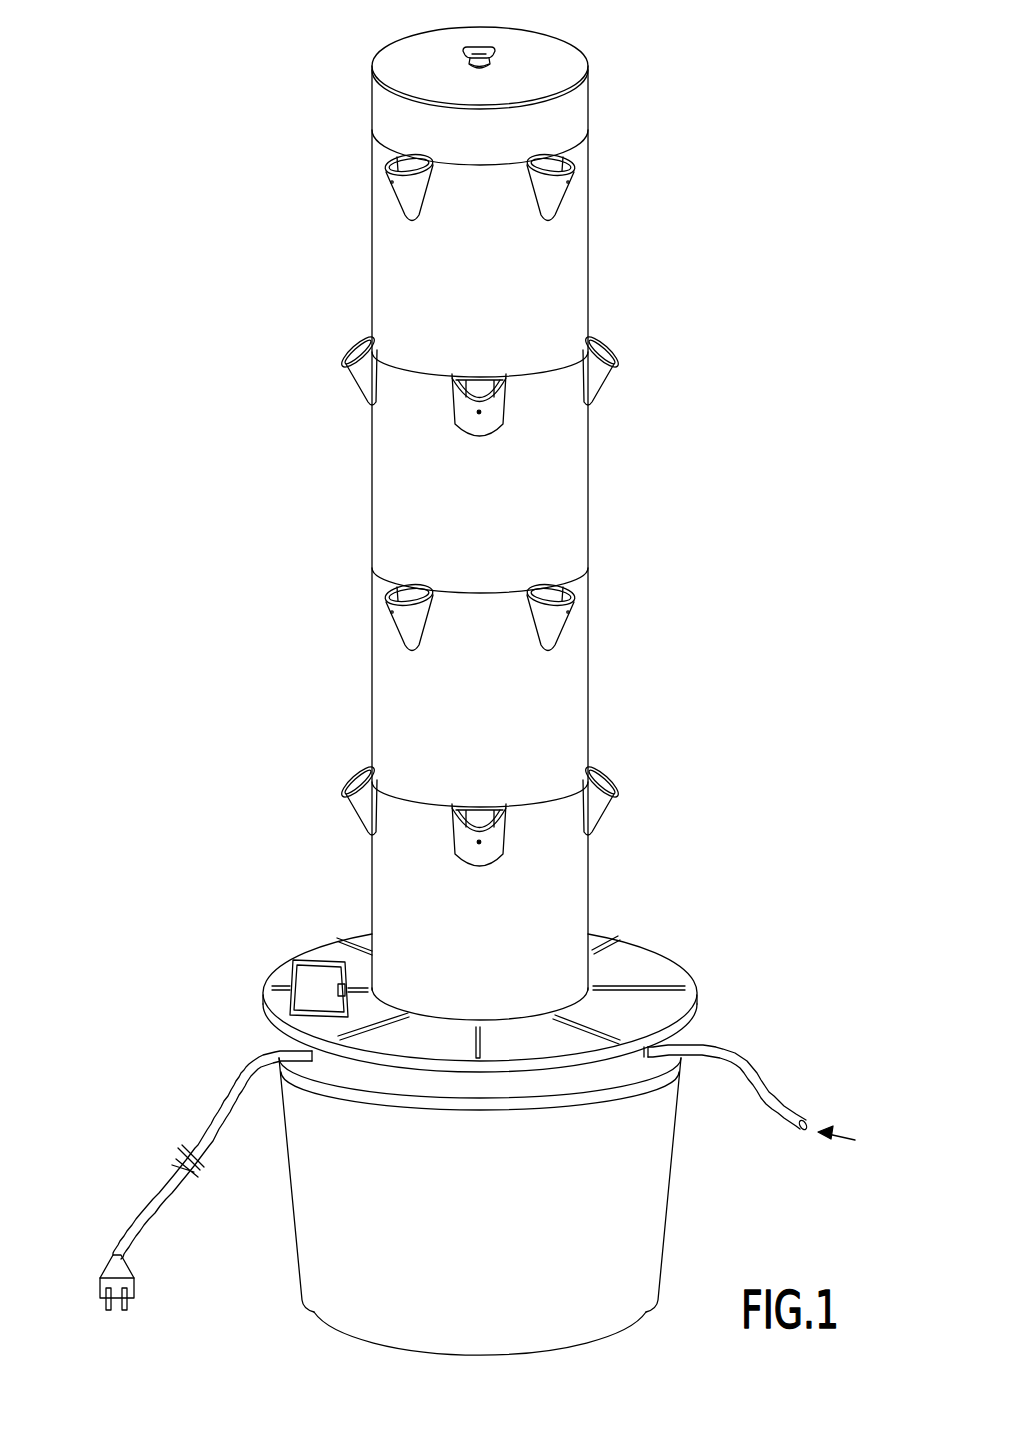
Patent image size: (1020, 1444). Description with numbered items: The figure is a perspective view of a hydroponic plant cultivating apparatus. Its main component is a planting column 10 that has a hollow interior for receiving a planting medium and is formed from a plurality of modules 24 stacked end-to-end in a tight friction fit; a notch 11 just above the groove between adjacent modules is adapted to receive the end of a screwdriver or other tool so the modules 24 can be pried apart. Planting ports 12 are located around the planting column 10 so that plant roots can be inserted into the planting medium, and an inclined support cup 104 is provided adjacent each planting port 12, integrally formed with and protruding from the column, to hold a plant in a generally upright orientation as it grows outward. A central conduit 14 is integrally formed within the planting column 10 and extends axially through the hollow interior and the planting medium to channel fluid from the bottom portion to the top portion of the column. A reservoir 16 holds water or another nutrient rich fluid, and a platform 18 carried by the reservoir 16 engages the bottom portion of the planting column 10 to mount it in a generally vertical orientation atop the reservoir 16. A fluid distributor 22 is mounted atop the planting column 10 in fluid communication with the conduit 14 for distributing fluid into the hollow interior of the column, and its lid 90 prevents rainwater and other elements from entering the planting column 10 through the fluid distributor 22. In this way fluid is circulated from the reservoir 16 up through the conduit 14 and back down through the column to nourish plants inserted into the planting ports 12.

The planting column 10 is at (596, 249).
The notch 11 is at (386, 792).
The planting ports 12 is at (553, 588).
The central conduit 14 is at (481, 386).
The reservoir 16 is at (633, 1200).
The platform 18 is at (650, 966).
The fluid distributor 22 is at (476, 86).
The modules 24 is at (410, 278).
The lid 90 is at (390, 66).
The inclined support cup 104 is at (613, 364).